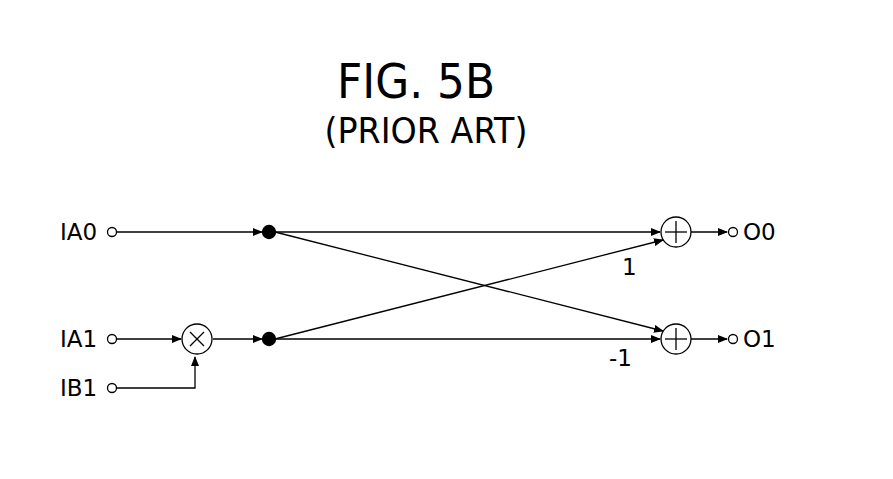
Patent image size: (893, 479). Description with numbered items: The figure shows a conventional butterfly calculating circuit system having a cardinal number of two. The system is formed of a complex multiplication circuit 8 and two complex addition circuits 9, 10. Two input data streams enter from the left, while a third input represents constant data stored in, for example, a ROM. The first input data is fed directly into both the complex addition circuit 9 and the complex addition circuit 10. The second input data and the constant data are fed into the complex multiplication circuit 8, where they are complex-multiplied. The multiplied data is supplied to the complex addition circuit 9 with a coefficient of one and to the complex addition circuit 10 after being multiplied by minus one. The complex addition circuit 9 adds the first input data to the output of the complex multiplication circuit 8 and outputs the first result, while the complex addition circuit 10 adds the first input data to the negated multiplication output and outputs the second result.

The complex multiplication circuit 8 is at (200, 325).
The complex addition circuit 9 is at (688, 219).
The complex addition circuit 10 is at (688, 326).